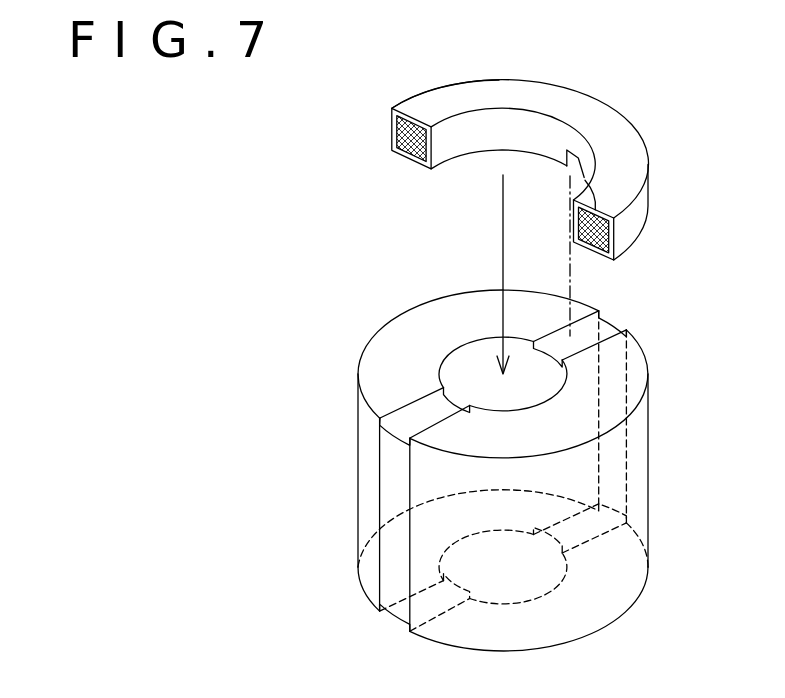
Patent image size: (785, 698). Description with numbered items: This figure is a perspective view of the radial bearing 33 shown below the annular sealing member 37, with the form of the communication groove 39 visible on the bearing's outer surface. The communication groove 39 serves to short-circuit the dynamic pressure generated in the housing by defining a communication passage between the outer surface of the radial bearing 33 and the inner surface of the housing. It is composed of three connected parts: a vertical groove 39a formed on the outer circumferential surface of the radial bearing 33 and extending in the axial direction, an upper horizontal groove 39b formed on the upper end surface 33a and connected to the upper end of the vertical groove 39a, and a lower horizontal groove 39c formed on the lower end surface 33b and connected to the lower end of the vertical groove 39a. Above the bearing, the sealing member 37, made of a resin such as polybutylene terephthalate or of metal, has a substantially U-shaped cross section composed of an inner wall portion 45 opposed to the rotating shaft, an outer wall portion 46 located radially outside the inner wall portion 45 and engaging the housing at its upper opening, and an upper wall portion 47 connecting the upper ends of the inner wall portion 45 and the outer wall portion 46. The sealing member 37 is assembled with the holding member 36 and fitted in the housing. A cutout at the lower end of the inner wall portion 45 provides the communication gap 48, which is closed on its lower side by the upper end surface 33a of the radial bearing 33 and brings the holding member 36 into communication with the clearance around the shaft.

The radial bearing 33 is at (445, 442).
The upper end surface 33a is at (447, 316).
The lower end surface 33b is at (590, 604).
The holding member 36 is at (519, 140).
The sealing member 37 is at (452, 97).
The communication groove 39 is at (410, 471).
The vertical groove 39a is at (395, 499).
The upper horizontal groove 39b is at (418, 413).
The lower horizontal groove 39c is at (440, 567).
The inner wall portion 45 is at (533, 132).
The outer wall portion 46 is at (630, 228).
The upper wall portion 47 is at (495, 95).
The communication gap 48 is at (568, 151).